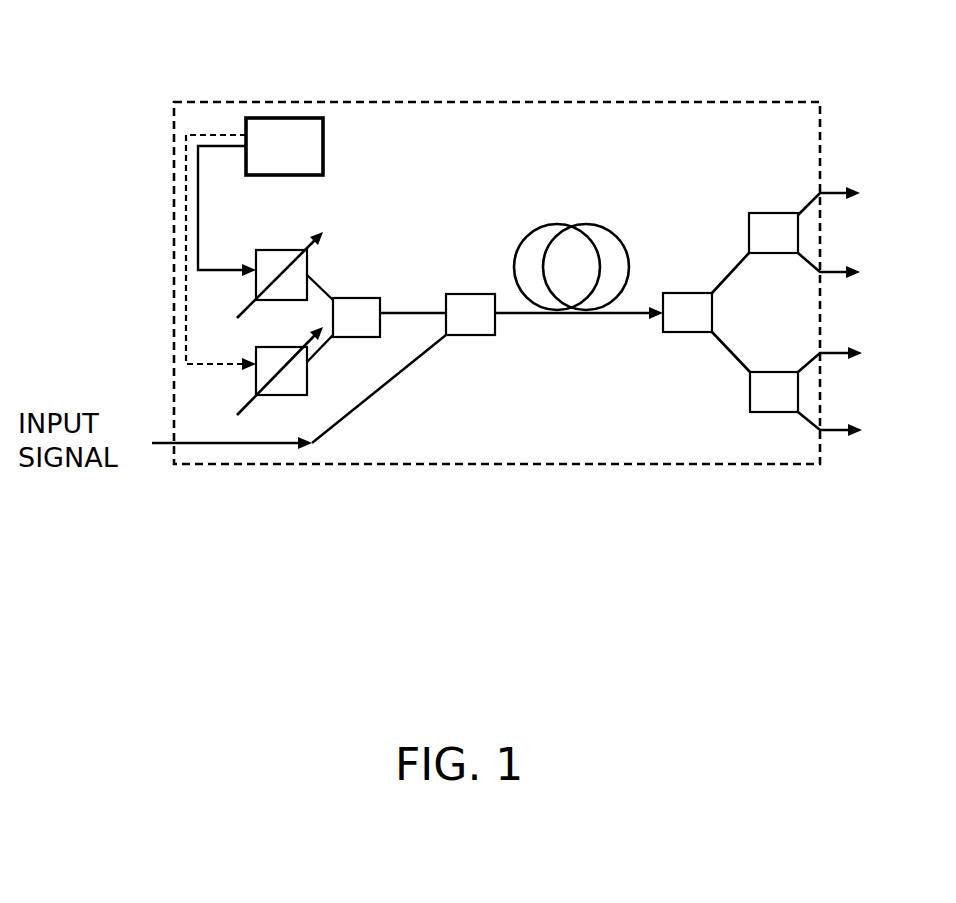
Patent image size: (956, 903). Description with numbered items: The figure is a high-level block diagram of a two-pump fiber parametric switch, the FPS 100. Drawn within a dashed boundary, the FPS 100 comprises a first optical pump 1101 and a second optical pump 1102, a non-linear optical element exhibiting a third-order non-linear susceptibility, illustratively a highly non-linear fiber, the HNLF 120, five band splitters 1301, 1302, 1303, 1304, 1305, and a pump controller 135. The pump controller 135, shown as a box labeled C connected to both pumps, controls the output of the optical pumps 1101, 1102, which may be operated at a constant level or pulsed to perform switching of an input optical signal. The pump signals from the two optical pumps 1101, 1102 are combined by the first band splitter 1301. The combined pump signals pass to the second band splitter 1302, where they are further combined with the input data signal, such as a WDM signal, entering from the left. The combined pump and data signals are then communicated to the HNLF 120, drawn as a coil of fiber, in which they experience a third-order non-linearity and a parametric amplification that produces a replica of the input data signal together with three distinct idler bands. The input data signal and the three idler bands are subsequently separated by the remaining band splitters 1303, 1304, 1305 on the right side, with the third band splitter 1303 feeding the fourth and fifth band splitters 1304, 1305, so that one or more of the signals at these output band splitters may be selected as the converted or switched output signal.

The fiber parametric switch 100 is at (868, 744).
The pump controller 135 is at (285, 118).
The first optical pump 1101 is at (257, 250).
The second optical pump 1102 is at (270, 397).
The highly non-linear fiber 120 is at (620, 242).
The first band splitter 1301 is at (357, 337).
The second band splitter 1302 is at (485, 335).
The third band splitter 1303 is at (684, 332).
The fourth band splitter 1304 is at (777, 213).
The fifth band splitter 1305 is at (765, 412).